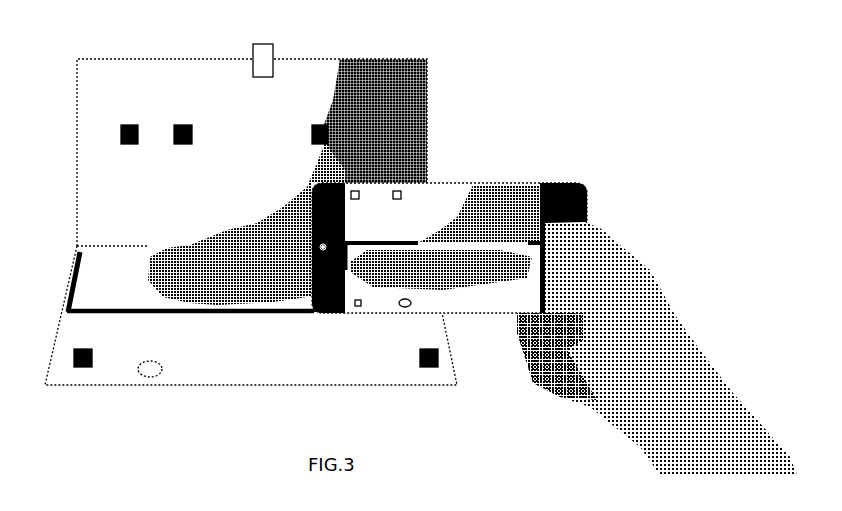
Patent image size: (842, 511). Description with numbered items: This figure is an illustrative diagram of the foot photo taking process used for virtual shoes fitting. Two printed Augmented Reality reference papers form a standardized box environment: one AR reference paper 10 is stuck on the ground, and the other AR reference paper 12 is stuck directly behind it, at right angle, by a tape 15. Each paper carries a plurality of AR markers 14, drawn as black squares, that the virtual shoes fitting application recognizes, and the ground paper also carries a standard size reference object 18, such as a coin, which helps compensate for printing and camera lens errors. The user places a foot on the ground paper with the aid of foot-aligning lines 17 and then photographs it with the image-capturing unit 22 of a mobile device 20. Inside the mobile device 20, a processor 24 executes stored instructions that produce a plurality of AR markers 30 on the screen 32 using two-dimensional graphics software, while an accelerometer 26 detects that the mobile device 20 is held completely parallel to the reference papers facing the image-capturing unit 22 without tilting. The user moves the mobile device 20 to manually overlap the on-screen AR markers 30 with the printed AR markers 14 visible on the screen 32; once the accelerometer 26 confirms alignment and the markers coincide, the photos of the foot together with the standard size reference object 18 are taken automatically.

The AR reference paper 10 is at (66, 299).
The AR reference paper 12 is at (77, 144).
The AR markers 14 is at (182, 120).
The tape 15 is at (275, 55).
The foot-aligning lines 17 is at (76, 266).
The standard size reference object 18 is at (150, 378).
The mobile device 20 is at (423, 284).
The image-capturing unit 22 is at (302, 303).
The processor 24 is at (322, 216).
The accelerometer 26 is at (300, 216).
The AR markers 30 is at (368, 405).
The screen 32 is at (428, 208).